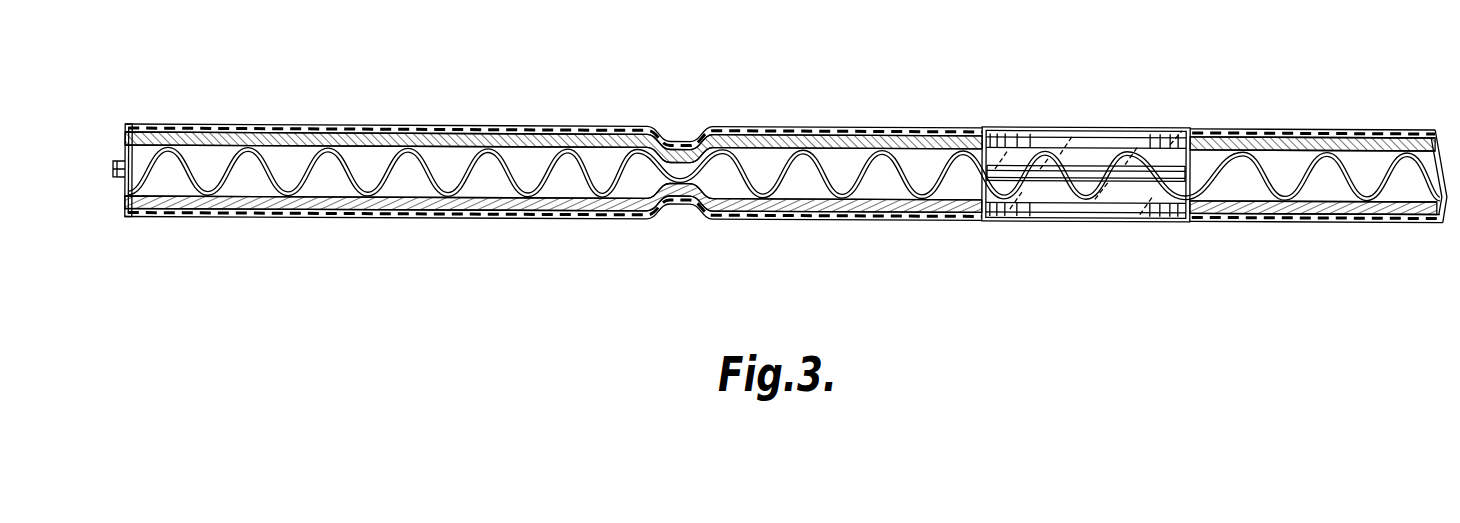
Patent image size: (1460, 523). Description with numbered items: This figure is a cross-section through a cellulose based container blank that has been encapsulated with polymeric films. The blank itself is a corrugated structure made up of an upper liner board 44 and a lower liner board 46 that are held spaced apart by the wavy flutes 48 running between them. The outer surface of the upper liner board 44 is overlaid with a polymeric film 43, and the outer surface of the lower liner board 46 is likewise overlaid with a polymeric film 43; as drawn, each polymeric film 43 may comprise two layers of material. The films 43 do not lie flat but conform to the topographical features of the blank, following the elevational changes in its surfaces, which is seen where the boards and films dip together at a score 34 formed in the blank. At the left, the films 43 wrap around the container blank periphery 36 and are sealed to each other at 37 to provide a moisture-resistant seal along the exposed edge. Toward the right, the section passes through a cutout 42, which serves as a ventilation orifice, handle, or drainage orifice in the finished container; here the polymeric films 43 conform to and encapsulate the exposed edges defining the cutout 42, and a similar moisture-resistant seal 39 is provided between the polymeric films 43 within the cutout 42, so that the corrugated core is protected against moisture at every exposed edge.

The score 34 is at (687, 133).
The container blank periphery 36 is at (118, 138).
The seal 37 is at (122, 179).
The moisture-resistant seal 39 is at (991, 166).
The cutout 42 is at (1105, 128).
The polymeric film 43 is at (421, 124).
The upper liner board 44 is at (148, 135).
The lower liner board 46 is at (170, 209).
The flutes 48 is at (352, 167).